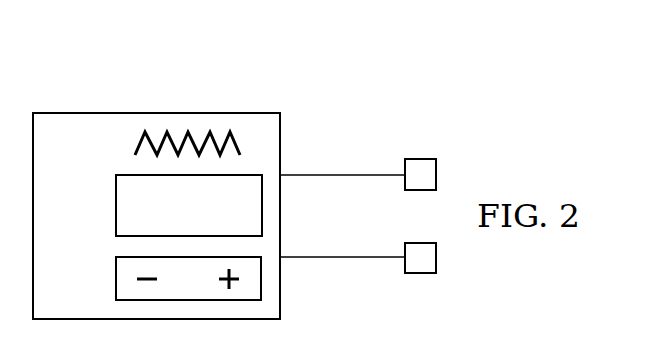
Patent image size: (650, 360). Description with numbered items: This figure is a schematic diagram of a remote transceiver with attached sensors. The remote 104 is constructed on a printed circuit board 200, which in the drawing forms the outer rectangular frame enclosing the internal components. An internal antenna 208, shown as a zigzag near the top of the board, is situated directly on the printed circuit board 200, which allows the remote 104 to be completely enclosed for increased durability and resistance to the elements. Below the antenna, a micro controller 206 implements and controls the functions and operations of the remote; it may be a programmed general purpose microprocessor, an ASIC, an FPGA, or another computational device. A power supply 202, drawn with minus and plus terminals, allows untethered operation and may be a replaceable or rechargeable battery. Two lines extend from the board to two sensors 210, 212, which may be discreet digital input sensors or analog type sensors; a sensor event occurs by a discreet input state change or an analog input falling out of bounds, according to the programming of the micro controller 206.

The remote 104 is at (84, 69).
The printed circuit board 200 is at (180, 109).
The internal antenna 208 is at (136, 144).
The micro controller 206 is at (116, 205).
The power supply 202 is at (115, 277).
The sensor 210 is at (422, 158).
The sensor 212 is at (420, 274).